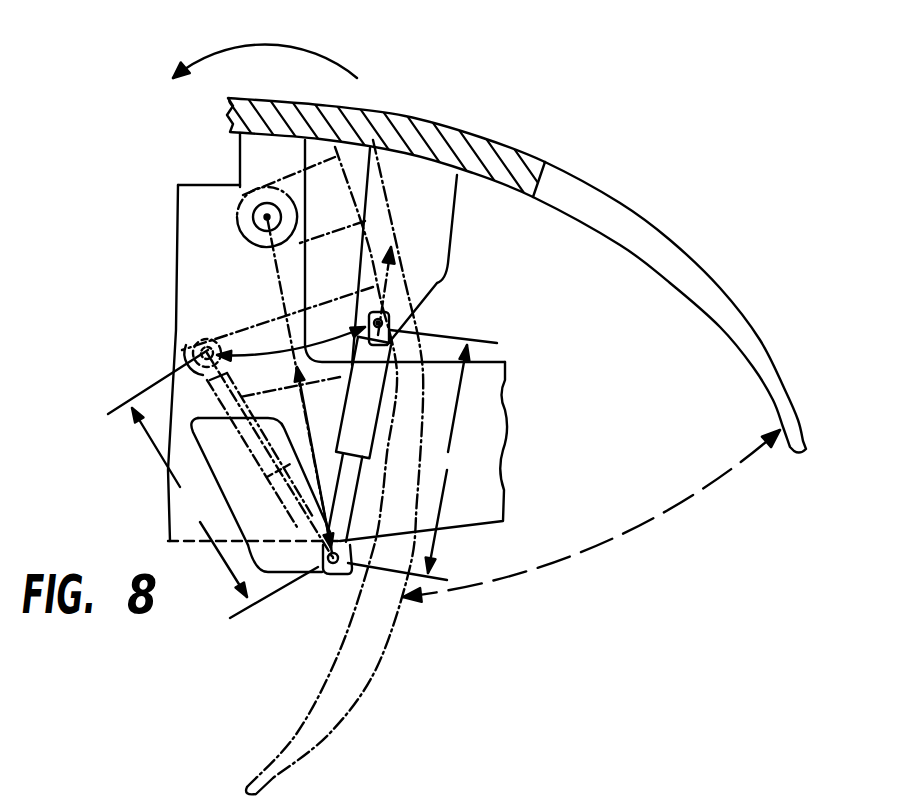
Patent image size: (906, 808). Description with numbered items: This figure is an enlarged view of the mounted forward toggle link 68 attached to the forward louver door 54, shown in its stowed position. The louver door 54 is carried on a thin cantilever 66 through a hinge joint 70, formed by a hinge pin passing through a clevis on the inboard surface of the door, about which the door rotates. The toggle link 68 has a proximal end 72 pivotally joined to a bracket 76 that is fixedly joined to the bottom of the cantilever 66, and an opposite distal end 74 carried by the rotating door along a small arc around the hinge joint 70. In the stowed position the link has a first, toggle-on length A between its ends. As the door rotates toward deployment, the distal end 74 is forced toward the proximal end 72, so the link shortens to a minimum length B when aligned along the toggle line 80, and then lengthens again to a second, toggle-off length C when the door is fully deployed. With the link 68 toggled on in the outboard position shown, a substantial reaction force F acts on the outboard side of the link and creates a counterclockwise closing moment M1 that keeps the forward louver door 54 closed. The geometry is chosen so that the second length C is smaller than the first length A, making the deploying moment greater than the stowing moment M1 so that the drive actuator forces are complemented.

The forward louver door 54 is at (380, 110).
The cantilever 66 is at (490, 441).
The toggle link 68 is at (373, 431).
The hinge joint 70 is at (252, 217).
The proximal end 72 is at (340, 574).
The distal end 74 is at (388, 314).
The bracket 76 is at (262, 518).
The toggle line 80 is at (290, 290).
The counterclockwise closing moment M1 is at (282, 44).
The reaction force F is at (382, 284).
The first length A is at (408, 462).
The minimum length B is at (314, 457).
The second length C is at (213, 484).